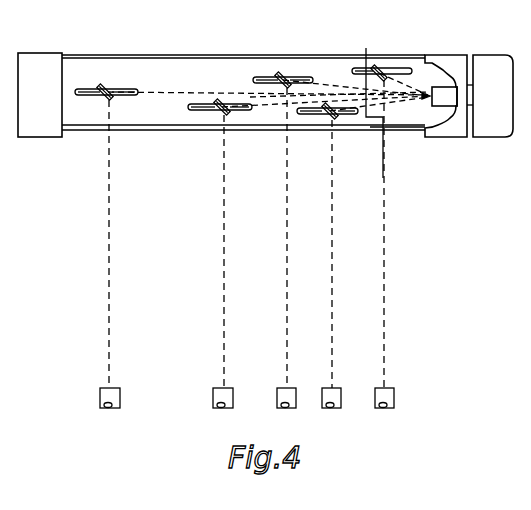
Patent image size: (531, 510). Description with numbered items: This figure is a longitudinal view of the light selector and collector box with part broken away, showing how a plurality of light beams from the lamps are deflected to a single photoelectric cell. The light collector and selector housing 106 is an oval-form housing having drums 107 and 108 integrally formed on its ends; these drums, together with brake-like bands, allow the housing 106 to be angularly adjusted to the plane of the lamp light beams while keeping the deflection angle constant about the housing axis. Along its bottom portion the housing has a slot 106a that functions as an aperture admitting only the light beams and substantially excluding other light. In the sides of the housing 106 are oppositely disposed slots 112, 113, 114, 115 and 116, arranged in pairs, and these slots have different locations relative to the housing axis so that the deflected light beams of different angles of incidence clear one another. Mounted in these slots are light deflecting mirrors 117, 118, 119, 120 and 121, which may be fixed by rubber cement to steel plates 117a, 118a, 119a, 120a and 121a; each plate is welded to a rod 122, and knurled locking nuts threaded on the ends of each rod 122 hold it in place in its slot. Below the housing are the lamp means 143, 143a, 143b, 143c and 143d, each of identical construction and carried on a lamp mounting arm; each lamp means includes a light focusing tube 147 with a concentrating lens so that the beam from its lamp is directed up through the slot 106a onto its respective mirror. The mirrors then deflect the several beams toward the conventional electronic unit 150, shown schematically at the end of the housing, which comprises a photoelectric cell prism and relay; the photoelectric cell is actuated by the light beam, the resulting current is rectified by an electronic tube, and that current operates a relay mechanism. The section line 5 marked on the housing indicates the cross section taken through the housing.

The light collector and selector housing 106 is at (95, 52).
The slot 106a is at (405, 130).
The drum 107 is at (450, 60).
The drum 108 is at (50, 138).
The slot 112 is at (386, 66).
The slot 113 is at (342, 118).
The slot 114 is at (308, 78).
The slot 115 is at (238, 106).
The slot 116 is at (142, 84).
The light deflecting mirror 117 is at (408, 90).
The steel plate 117a is at (381, 66).
The light deflecting mirror 118 is at (335, 118).
The steel plate 118a is at (327, 116).
The light deflecting mirror 119 is at (296, 77).
The steel plate 119a is at (283, 78).
The light deflecting mirror 120 is at (227, 112).
The steel plate 120a is at (218, 110).
The light deflecting mirror 121 is at (110, 95).
The steel plate 121a is at (100, 95).
The rod 122 is at (105, 88).
The lamp means 143 is at (407, 383).
The lamp means 143a is at (348, 383).
The lamp means 143b is at (302, 383).
The lamp means 143c is at (241, 383).
The lamp means 143d is at (128, 383).
The light focusing tube 147 is at (213, 399).
The electronic unit 150 is at (490, 96).
The section line 5- 5 is at (376, 48).